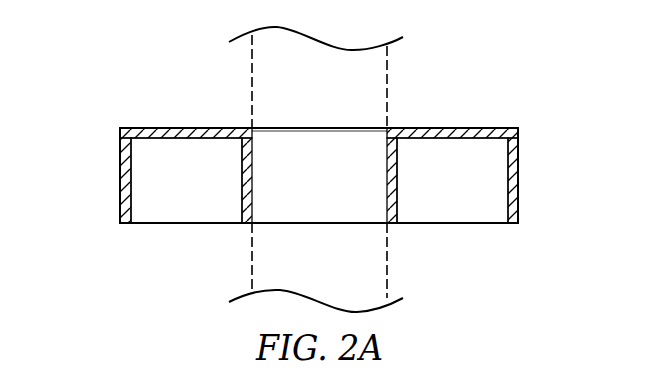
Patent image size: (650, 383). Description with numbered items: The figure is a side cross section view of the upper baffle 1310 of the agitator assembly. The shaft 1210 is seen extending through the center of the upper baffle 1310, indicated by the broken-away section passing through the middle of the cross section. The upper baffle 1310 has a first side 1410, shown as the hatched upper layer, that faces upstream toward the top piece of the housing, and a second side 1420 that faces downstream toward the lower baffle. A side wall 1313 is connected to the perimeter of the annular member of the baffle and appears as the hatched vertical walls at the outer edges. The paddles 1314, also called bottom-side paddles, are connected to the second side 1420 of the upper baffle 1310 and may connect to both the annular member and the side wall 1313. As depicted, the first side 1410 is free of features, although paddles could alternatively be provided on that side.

The upper baffle 1310 is at (124, 30).
The shaft 1210 is at (282, 50).
The paddles 1314 is at (209, 194).
The first side 1410 is at (463, 128).
The side wall 1313 is at (518, 168).
The second side 1420 is at (462, 223).